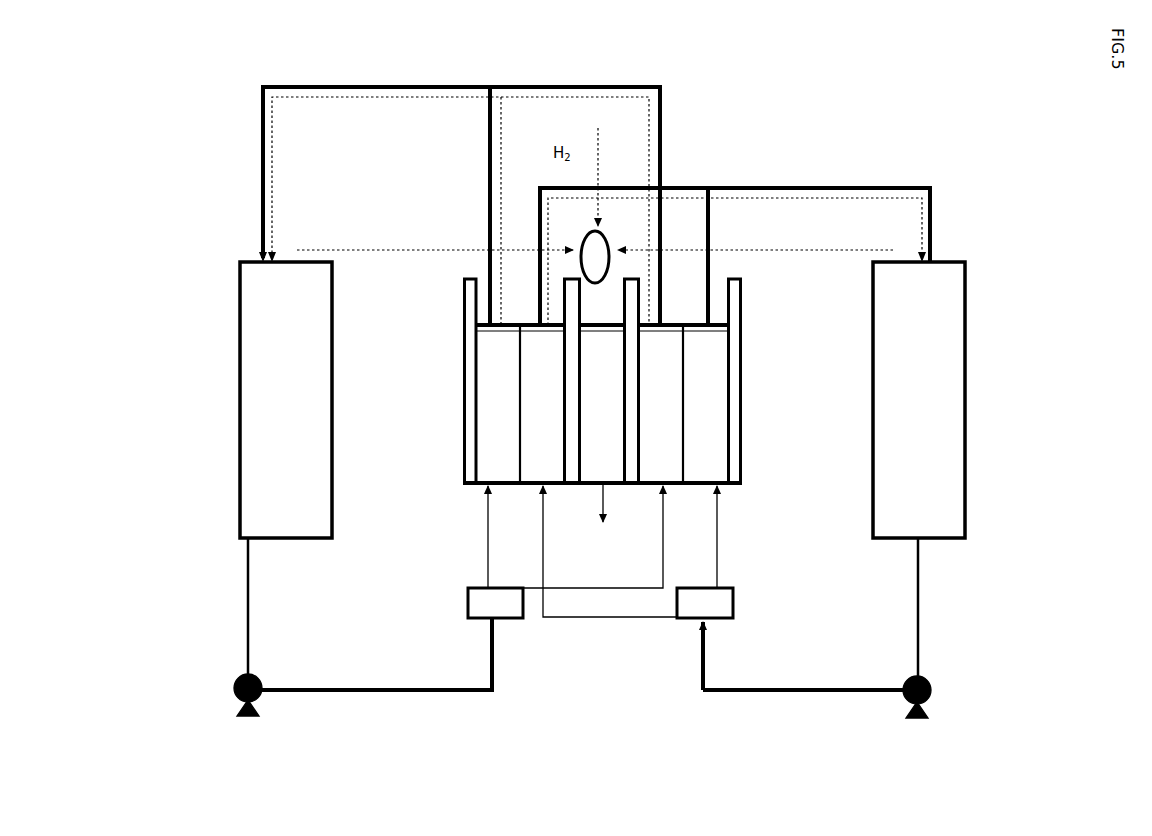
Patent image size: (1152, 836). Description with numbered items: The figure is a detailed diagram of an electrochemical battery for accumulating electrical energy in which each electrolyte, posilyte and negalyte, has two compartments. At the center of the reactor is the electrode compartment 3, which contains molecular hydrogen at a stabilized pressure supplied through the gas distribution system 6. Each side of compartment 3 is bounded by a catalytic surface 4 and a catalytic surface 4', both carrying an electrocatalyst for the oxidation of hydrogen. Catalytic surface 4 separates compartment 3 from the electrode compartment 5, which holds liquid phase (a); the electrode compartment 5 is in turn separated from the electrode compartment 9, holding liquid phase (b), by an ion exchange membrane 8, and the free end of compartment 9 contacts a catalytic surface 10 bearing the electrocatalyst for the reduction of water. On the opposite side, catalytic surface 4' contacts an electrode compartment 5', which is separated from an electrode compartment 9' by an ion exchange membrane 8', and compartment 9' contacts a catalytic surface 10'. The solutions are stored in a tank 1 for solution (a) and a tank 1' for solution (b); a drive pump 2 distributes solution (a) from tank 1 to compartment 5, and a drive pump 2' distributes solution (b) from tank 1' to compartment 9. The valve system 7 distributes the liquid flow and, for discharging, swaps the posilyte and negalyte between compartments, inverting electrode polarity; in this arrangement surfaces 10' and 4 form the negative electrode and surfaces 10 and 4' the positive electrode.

The tank 1 is at (235, 400).
The tank 1' is at (954, 400).
The drive pump 2 is at (298, 713).
The drive pump 2' is at (866, 715).
The electrode compartment 3 is at (603, 516).
The catalytic surface 4 is at (723, 341).
The catalytic surface 4' is at (472, 342).
The electrode compartment 5 is at (730, 378).
The electrode compartment 5' is at (458, 377).
The gas distribution system 6 is at (591, 254).
The valve system 7 is at (693, 607).
The ion exchange membrane 8 is at (747, 415).
The ion exchange membrane 8' is at (451, 414).
The electrode compartment 9 is at (748, 418).
The electrode compartment 9' is at (457, 416).
The catalytic surface 10 is at (767, 440).
The catalytic surface 10' is at (434, 440).